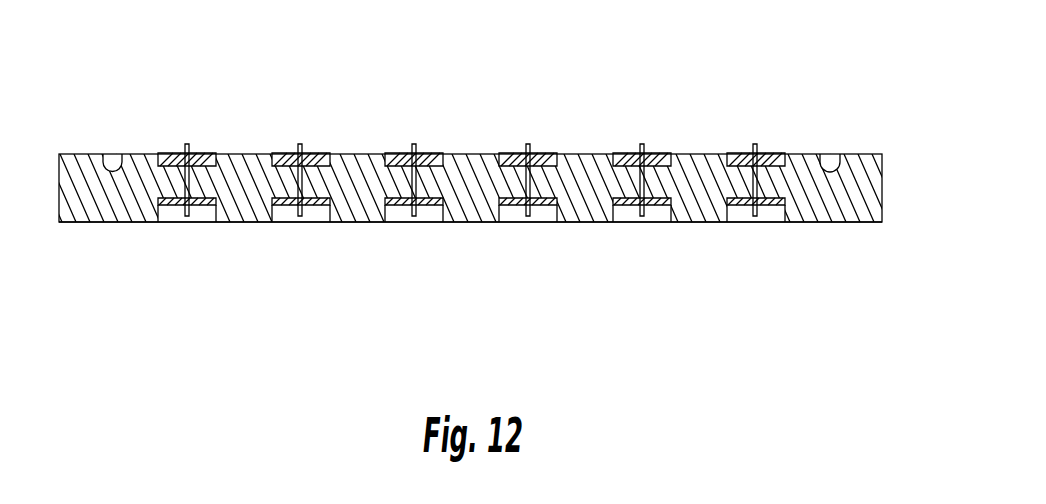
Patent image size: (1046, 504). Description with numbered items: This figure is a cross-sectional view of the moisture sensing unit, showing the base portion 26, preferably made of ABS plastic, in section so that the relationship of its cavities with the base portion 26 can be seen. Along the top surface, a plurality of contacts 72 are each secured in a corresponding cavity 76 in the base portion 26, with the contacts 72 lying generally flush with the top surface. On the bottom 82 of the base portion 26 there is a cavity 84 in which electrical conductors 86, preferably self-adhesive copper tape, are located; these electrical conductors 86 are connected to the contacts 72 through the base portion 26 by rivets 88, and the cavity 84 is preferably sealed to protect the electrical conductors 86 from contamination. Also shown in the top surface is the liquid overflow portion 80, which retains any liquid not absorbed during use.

The base portion 26 is at (882, 173).
The contacts 72 is at (657, 153).
The cavity 76 is at (434, 150).
The liquid overflow portion 80 is at (828, 163).
The bottom 82 is at (822, 223).
The cavity 84 is at (443, 207).
The electrical conductors 86 is at (528, 210).
The rivets 88 is at (297, 145).